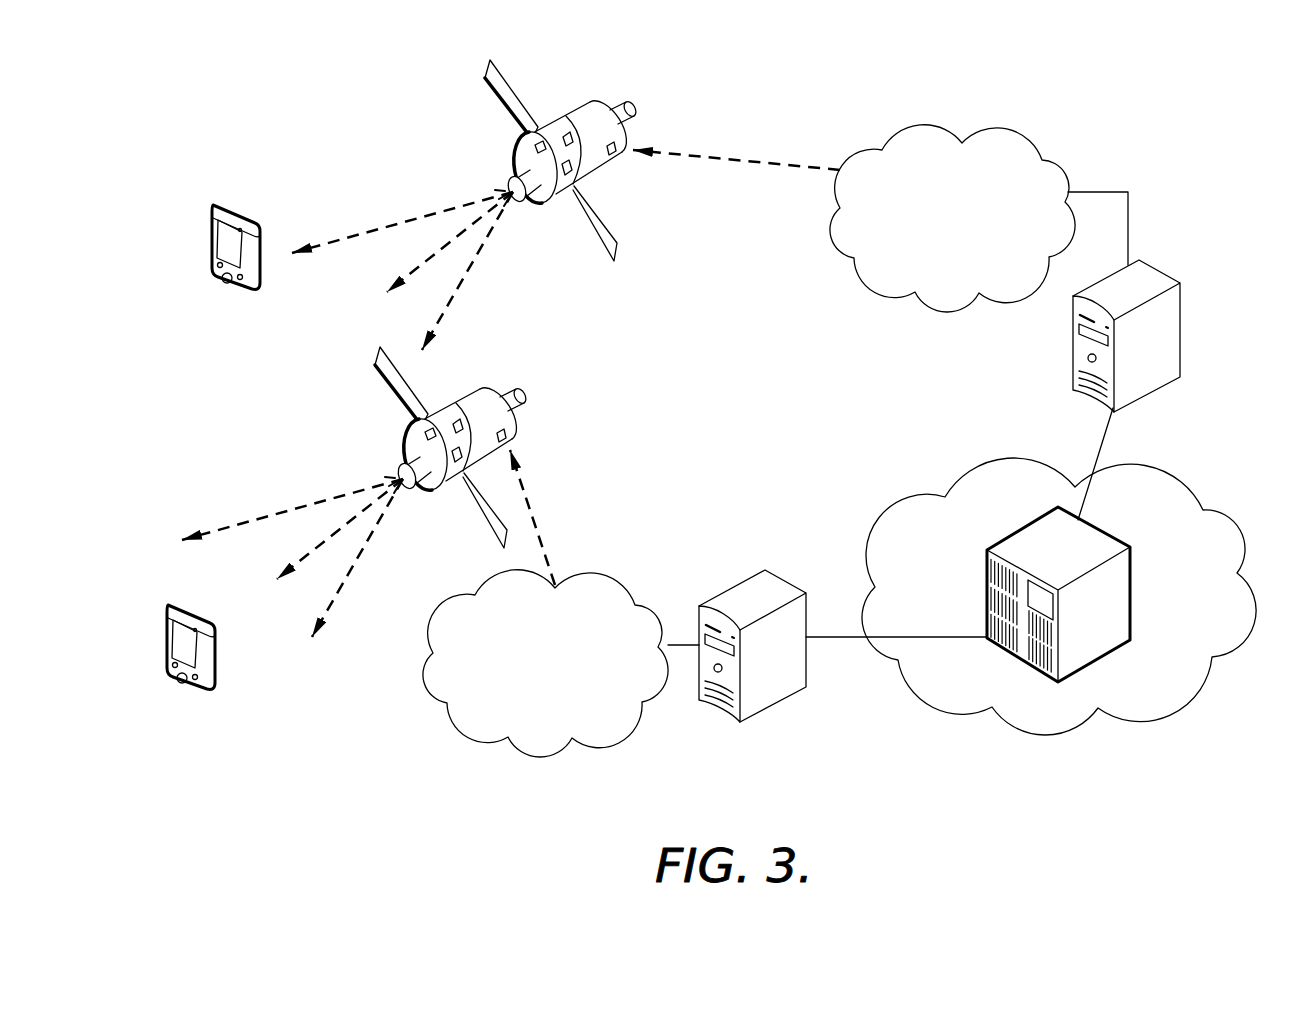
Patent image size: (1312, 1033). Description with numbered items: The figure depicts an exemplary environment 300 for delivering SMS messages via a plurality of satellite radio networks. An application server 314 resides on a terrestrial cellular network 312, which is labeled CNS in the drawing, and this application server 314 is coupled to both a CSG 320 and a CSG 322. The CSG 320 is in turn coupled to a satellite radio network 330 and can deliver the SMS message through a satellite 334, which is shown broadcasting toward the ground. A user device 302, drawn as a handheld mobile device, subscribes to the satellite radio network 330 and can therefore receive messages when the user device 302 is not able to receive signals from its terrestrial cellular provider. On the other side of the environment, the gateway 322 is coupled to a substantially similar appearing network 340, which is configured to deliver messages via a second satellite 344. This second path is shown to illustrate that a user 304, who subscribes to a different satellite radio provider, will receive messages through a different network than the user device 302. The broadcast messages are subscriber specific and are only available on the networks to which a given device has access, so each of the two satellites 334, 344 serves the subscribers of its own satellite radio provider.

The exemplary environment 300 is at (214, 105).
The user device 302 is at (198, 607).
The user 304 is at (243, 207).
The terrestrial cellular network 312 is at (1165, 469).
The application server 314 is at (1098, 526).
The CSG 320 is at (790, 580).
The CSG 322 is at (1164, 271).
The satellite radio network 330 is at (610, 580).
The satellite 334 is at (523, 390).
The network 340 is at (1030, 142).
The satellite 344 is at (627, 101).